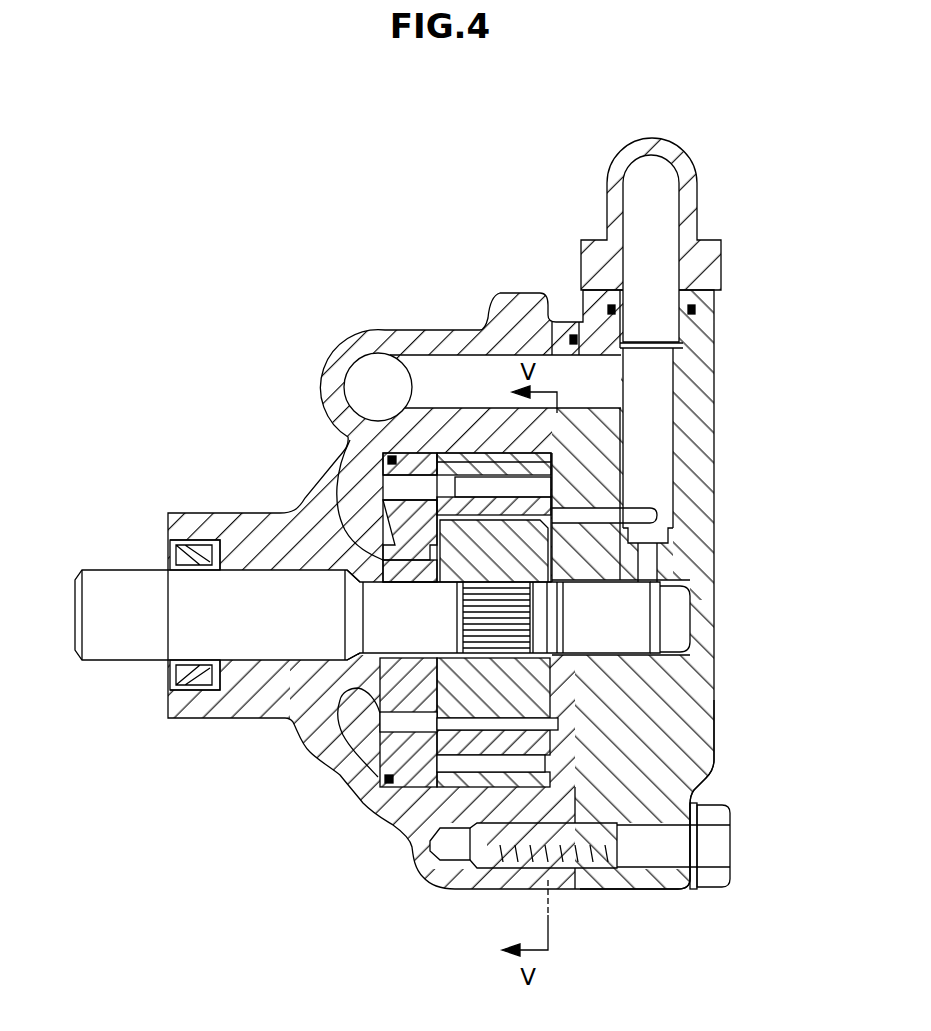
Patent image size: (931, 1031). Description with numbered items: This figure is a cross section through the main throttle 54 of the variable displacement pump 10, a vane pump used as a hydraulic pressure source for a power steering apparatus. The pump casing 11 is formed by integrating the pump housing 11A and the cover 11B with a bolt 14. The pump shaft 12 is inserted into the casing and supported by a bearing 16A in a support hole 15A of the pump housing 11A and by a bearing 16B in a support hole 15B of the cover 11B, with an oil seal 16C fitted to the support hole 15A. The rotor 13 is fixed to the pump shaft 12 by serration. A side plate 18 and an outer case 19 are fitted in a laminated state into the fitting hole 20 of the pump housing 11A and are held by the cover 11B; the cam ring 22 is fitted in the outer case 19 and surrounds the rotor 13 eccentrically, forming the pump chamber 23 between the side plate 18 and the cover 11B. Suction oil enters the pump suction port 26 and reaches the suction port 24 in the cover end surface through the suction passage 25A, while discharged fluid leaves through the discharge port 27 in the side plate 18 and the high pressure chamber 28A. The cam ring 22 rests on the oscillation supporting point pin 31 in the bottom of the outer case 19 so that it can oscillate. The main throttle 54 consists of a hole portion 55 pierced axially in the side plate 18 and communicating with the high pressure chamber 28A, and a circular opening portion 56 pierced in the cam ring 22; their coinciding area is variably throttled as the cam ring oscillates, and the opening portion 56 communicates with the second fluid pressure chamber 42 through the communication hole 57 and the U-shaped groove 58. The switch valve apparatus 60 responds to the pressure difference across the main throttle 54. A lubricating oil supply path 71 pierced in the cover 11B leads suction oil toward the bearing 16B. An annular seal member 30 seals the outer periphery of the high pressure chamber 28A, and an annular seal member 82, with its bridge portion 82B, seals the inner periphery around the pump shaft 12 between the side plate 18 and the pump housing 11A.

The variable displacement pump 10 is at (206, 275).
The pump casing 11 is at (212, 505).
The pump housing 11A is at (291, 505).
The cover 11B is at (702, 326).
The pump shaft 12 is at (122, 585).
The rotor 13 is at (630, 710).
The bolt 14 is at (715, 846).
The support hole 15A is at (247, 666).
The support hole 15B is at (690, 640).
The bearing 16A is at (277, 667).
The bearing 16B is at (600, 680).
The oil seal 16C is at (162, 673).
The side plate 18 is at (389, 787).
The outer case 19 is at (458, 790).
The fitting hole 20 is at (456, 458).
The cam ring 22 is at (560, 775).
The pump chamber 23 is at (575, 735).
The suction port 24 is at (642, 515).
The suction passage 25A is at (663, 440).
The suction port 26 is at (668, 178).
The discharge port 27 is at (373, 725).
The high pressure chamber 28A is at (357, 712).
The annular seal member 30 is at (352, 403).
The oscillation supporting point pin 31 is at (540, 765).
The second fluid pressure chamber 42 is at (507, 470).
The main throttle 54 is at (400, 465).
The hole portion 55 is at (397, 487).
The opening portion 56 is at (427, 463).
The communication hole 57 is at (483, 487).
The U-shaped groove 58 is at (537, 480).
The switch valve apparatus 60 is at (336, 357).
The lubricating oil supply path 71 is at (650, 562).
The annular seal member 82 is at (342, 652).
The bridge portion 82B is at (350, 578).